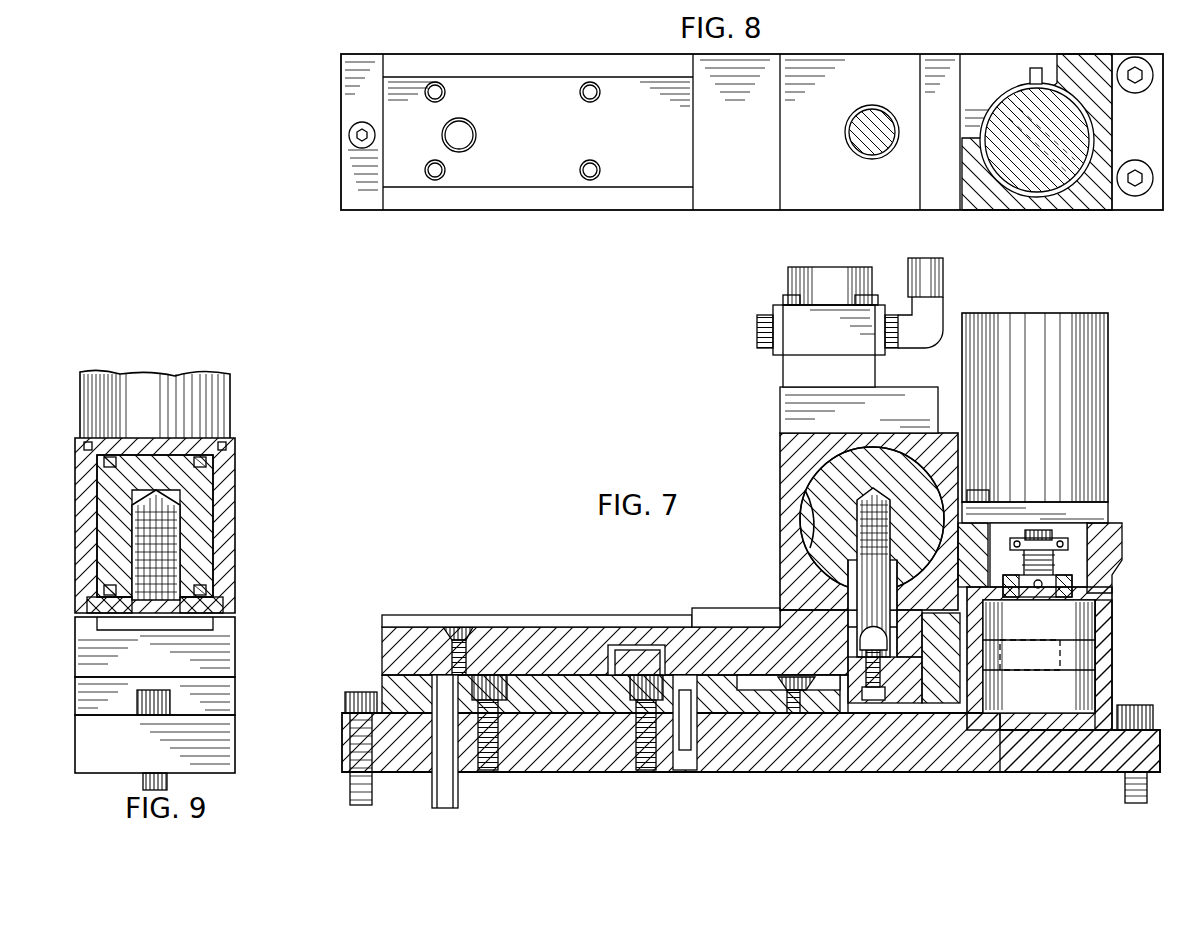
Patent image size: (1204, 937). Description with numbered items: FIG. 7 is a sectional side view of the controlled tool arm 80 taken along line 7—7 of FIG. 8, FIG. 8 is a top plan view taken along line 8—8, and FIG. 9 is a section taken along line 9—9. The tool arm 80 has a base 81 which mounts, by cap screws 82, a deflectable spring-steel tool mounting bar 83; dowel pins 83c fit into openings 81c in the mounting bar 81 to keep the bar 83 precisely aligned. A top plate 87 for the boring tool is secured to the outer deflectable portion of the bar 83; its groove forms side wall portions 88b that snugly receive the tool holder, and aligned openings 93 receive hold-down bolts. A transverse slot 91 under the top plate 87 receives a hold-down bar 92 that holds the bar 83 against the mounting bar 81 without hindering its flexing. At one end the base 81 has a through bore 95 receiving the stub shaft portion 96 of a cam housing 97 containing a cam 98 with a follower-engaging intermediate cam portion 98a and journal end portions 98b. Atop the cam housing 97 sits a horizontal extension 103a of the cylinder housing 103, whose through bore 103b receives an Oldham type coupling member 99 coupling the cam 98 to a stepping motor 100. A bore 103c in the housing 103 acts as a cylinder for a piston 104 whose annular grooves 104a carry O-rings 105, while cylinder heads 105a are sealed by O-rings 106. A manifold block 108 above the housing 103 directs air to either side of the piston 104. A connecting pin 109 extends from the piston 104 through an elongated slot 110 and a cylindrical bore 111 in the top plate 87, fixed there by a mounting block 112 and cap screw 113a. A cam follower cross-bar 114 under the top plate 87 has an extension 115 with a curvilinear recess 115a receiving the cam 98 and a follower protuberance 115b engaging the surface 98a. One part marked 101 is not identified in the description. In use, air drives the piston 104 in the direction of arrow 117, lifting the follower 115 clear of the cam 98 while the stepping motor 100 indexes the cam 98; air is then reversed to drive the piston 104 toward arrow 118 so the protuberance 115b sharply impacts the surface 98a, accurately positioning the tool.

In FIG. 8, the line 7— 7 is at (341, 135).
In FIG. 7, the line 8— 8 is at (336, 610).
In FIG. 7, the line 9— 9 is at (958, 374).
In FIG. 7, the controlled tool arm 80 is at (568, 597).
In FIG. 8, the base 81 is at (345, 190).
In FIG. 7, the base 81 is at (540, 765).
In FIG. 9, the base 81 is at (132, 758).
In FIG. 7, the openings 81c is at (690, 745).
In FIG. 7, the cap screws 82 is at (640, 745).
In FIG. 7, the tool mounting bar 83 is at (615, 694).
In FIG. 9, the tool mounting bar 83 is at (225, 712).
In FIG. 7, the dowel pins 83c is at (703, 735).
In FIG. 8, the top plate 87 is at (536, 88).
In FIG. 7, the top plate 87 is at (510, 640).
In FIG. 9, the top plate 87 is at (225, 668).
In FIG. 8, the side wall portions 88b is at (470, 78).
In FIG. 7, the side wall portions 88b is at (445, 624).
In FIG. 7, the transverse slot 91 is at (593, 657).
In FIG. 7, the hold-down bar 92 is at (640, 655).
In FIG. 8, the aligned openings 93 is at (590, 83).
In FIG. 7, the through bore 95 is at (1075, 735).
In FIG. 7, the stub shaft portion 96 is at (1040, 760).
In FIG. 8, the cam housing 97 is at (1093, 66).
In FIG. 7, the cam housing 97 is at (1108, 695).
In FIG. 7, the cam 98 is at (1105, 612).
In FIG. 7, the intermediate cam portion 98a is at (1090, 660).
In FIG. 7, the journal end portions 98b is at (1048, 701).
In FIG. 7, the Oldham type coupling member 99 is at (1062, 556).
In FIG. 7, the stepping motor 100 is at (1106, 440).
In FIG. 9, the stepping motor 100 is at (82, 410).
In FIG. 7, the solenoid valve 101 is at (850, 322).
In FIG. 7, the cylinder housing 103 is at (783, 462).
In FIG. 9, the cylinder housing 103 is at (205, 445).
In FIG. 7, the horizontal extension 103a is at (1105, 577).
In FIG. 7, the through bore 103b is at (1082, 570).
In FIG. 7, the bore 103c is at (805, 497).
In FIG. 7, the piston 104 is at (812, 513).
In FIG. 9, the piston 104 is at (108, 480).
In FIG. 9, the annular grooves 104a is at (205, 462).
In FIG. 9, the O-rings 105 is at (205, 585).
In FIG. 9, the cylinder heads 105a is at (85, 500).
In FIG. 9, the sealing O-rings 106 is at (225, 605).
In FIG. 7, the manifold block 108 is at (780, 405).
In FIG. 8, the connecting pin 109 is at (872, 112).
In FIG. 7, the connecting pin 109 is at (858, 520).
In FIG. 9, the connecting pin 109 is at (178, 545).
In FIG. 7, the elongated slot 110 is at (856, 600).
In FIG. 7, the cylindrical bore 111 is at (855, 627).
In FIG. 7, the mounting block 112 is at (908, 703).
In FIG. 7, the cap screw 113a is at (872, 703).
In FIG. 8, the cross-bar 114 is at (928, 60).
In FIG. 7, the cross-bar 114 is at (945, 703).
In FIG. 8, the extension 115 is at (968, 62).
In FIG. 8, the curvilinear recess 115a is at (990, 100).
In FIG. 8, the follower protuberance 115b is at (1035, 72).
In FIG. 9, the arrow 117 is at (190, 331).
In FIG. 9, the arrow 118 is at (188, 344).